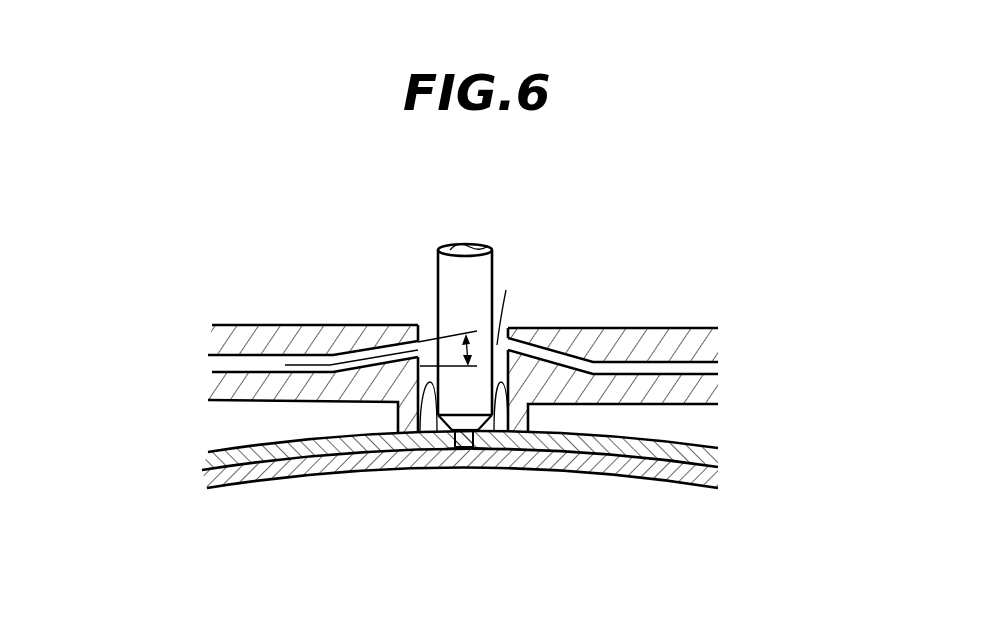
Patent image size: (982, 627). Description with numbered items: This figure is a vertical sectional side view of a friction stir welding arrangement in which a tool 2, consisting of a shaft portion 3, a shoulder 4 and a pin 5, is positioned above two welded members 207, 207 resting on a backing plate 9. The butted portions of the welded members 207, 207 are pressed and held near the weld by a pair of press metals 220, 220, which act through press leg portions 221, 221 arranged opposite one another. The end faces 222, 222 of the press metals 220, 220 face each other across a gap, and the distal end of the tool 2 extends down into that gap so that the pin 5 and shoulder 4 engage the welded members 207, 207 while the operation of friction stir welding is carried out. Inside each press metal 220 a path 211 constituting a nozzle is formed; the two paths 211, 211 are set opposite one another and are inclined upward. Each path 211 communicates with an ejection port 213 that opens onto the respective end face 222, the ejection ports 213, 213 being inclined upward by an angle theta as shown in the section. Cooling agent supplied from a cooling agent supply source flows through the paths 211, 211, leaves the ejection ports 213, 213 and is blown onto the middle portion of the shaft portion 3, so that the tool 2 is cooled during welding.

The tool 2 is at (470, 300).
The shaft portion 3 is at (454, 262).
The shoulder 4 is at (492, 468).
The pin 5 is at (457, 460).
The backing plate 9 is at (485, 462).
The welded member 207 is at (457, 474).
The path 211 is at (378, 324).
The ejection port 213 is at (432, 347).
The press metal 220 is at (323, 323).
The press leg portion 221 is at (367, 472).
The end face 222 is at (430, 433).